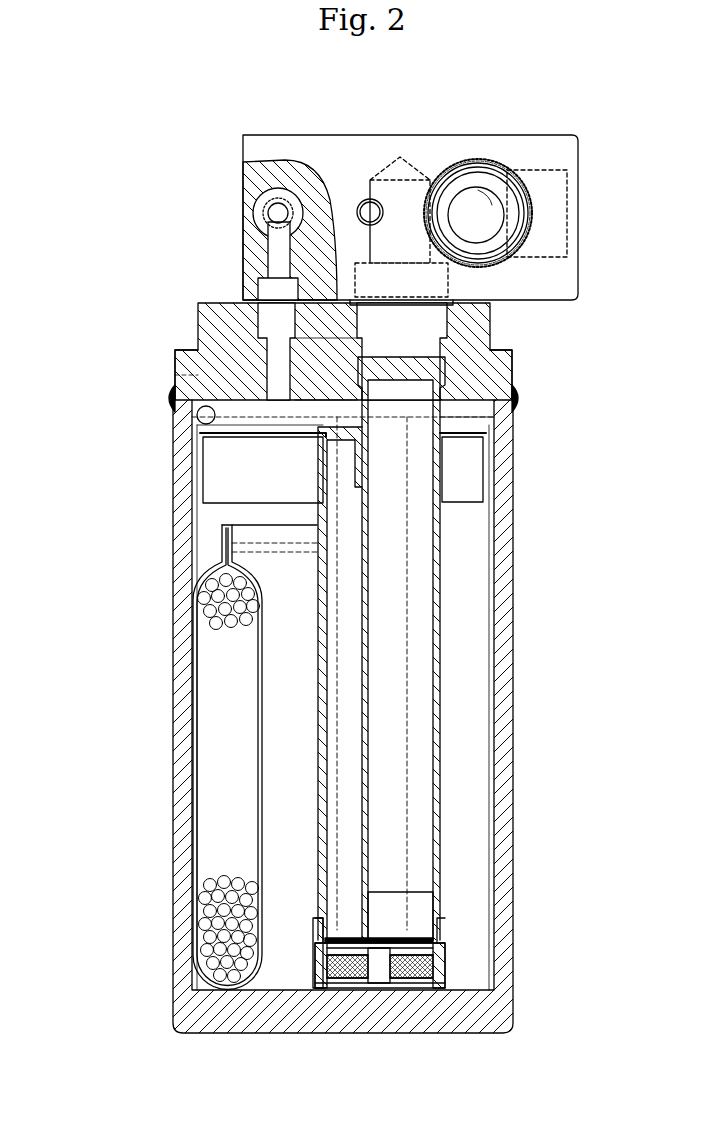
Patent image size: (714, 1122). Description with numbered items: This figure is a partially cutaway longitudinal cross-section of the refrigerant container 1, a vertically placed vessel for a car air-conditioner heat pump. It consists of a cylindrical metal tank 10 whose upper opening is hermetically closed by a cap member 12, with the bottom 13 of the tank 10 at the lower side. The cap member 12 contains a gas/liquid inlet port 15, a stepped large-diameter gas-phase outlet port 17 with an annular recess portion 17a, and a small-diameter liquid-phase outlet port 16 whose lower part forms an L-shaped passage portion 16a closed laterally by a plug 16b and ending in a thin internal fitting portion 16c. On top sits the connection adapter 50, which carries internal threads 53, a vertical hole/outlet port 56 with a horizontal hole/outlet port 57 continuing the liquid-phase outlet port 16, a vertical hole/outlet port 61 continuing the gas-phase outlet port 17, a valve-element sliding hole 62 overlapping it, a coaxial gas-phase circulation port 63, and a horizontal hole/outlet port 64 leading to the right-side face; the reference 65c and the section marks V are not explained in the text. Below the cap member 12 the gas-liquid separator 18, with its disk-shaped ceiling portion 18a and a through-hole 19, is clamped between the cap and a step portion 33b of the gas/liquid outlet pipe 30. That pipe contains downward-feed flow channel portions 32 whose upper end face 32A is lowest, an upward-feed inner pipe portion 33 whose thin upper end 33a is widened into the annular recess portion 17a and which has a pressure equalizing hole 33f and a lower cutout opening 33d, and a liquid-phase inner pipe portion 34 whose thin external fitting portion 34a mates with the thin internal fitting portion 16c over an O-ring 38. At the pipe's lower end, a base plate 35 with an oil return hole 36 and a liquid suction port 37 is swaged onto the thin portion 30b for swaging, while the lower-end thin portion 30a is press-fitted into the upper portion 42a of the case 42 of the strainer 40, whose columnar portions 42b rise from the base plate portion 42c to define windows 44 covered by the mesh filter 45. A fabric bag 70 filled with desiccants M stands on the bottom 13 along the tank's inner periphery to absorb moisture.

The refrigerant container 1 is at (104, 300).
The tank 10 is at (513, 572).
The cap member 12 is at (197, 318).
The bottom 13 is at (245, 1033).
The gas/liquid inlet port 15 is at (176, 375).
The liquid-phase outlet port 16 is at (198, 338).
The passage portion 16a is at (262, 425).
The plug 16b is at (196, 414).
The thin internal fitting portion 16c is at (318, 478).
The gas-phase outlet port 17 is at (490, 338).
The annular recess portion 17a is at (326, 369).
The gas-liquid separator 18 is at (205, 470).
The ceiling portion 18a is at (200, 440).
The through-hole 19 is at (463, 467).
The gas/liquid outlet pipe 30 is at (442, 636).
The lower-end thin portion 30a is at (445, 935).
The thin portion for swaging 30b is at (445, 960).
The downward-feed flow channel portion 32 is at (425, 745).
The upper end face of downward-feed flow channel portion 32A is at (474, 532).
The upward-feed inner pipe portion 33 is at (445, 690).
The upper end 33a is at (514, 380).
The step portion 33b is at (470, 425).
The cutout opening 33d is at (388, 892).
The pressure equalizing hole 33f is at (484, 500).
The liquid-phase inner pipe portion 34 is at (320, 673).
The thin external fitting portion 34a is at (330, 440).
The base plate 35 is at (420, 935).
The oil return hole 36 is at (403, 930).
The liquid suction port 37 is at (316, 930).
The O-ring 38 is at (322, 460).
The strainer 40 is at (470, 990).
The case 42 is at (300, 1000).
The upper portion 42a is at (312, 927).
The columnar portions 42b is at (385, 990).
The base plate portion 42c is at (350, 990).
The windows 44 is at (408, 990).
The mesh filter 45 is at (340, 990).
The connection adapter 50 is at (232, 189).
The internal threads 53 is at (378, 224).
The vertical hole/outlet port 56 is at (262, 258).
The horizontal hole/outlet port 57 is at (266, 212).
The vertical hole/outlet port 61 is at (386, 175).
The valve-element sliding hole 62 is at (462, 158).
The gas-phase circulation port 63 is at (500, 195).
The horizontal hole/outlet port 64 is at (578, 240).
The knob outer ring 65c is at (440, 167).
The bag 70 is at (192, 772).
The desiccants M is at (205, 597).
The section line V is at (300, 978).